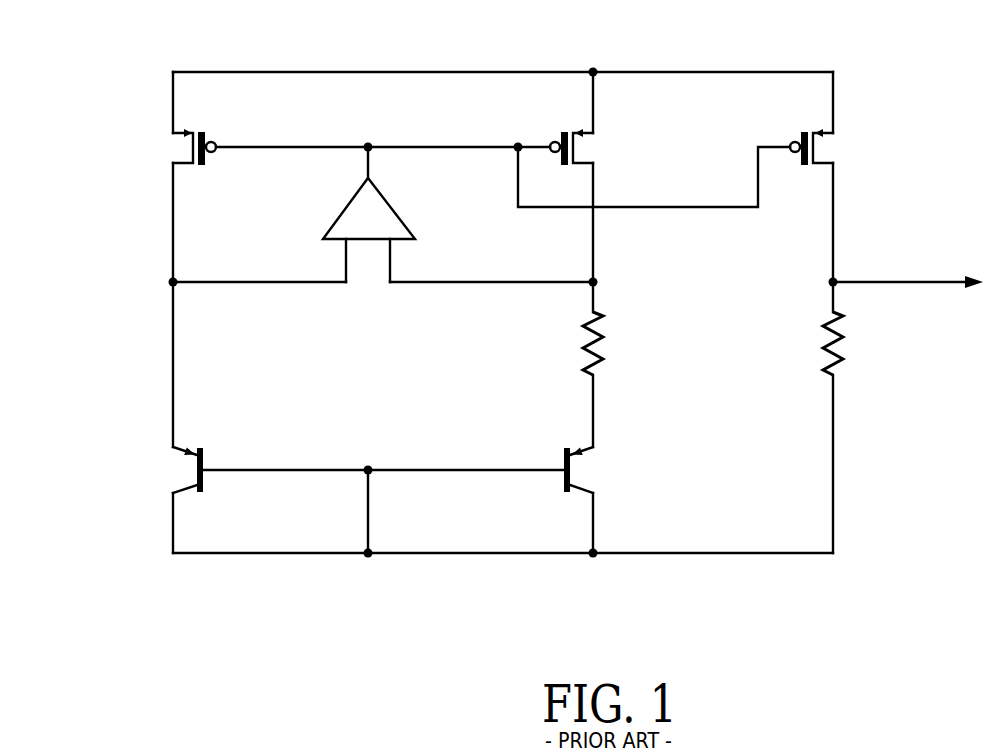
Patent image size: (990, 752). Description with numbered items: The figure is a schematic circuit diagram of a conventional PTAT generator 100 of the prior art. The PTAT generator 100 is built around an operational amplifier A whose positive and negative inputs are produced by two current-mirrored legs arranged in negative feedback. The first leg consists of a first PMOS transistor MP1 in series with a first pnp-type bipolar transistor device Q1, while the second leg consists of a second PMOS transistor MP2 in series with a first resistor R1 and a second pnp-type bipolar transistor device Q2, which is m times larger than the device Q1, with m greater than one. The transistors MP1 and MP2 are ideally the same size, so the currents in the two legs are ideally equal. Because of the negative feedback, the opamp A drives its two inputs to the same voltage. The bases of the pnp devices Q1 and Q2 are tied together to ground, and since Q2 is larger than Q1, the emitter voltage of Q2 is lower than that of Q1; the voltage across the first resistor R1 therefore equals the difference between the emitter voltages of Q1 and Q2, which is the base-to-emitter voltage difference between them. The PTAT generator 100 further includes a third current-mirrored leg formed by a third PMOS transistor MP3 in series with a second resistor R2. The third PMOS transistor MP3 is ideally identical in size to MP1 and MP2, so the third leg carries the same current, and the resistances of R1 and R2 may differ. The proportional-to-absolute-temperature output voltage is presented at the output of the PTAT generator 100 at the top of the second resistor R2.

The PTAT generator 100 is at (556, 373).
The first PMOS transistor MP1 is at (173, 147).
The second PMOS transistor MP2 is at (594, 147).
The third PMOS transistor MP3 is at (834, 147).
The operational amplifier A is at (369, 208).
The first resistor R1 is at (606, 343).
The second resistor R2 is at (846, 343).
The first pnp-type bipolar transistor device Q1 is at (207, 476).
The second pnp-type bipolar transistor device Q2 is at (570, 476).